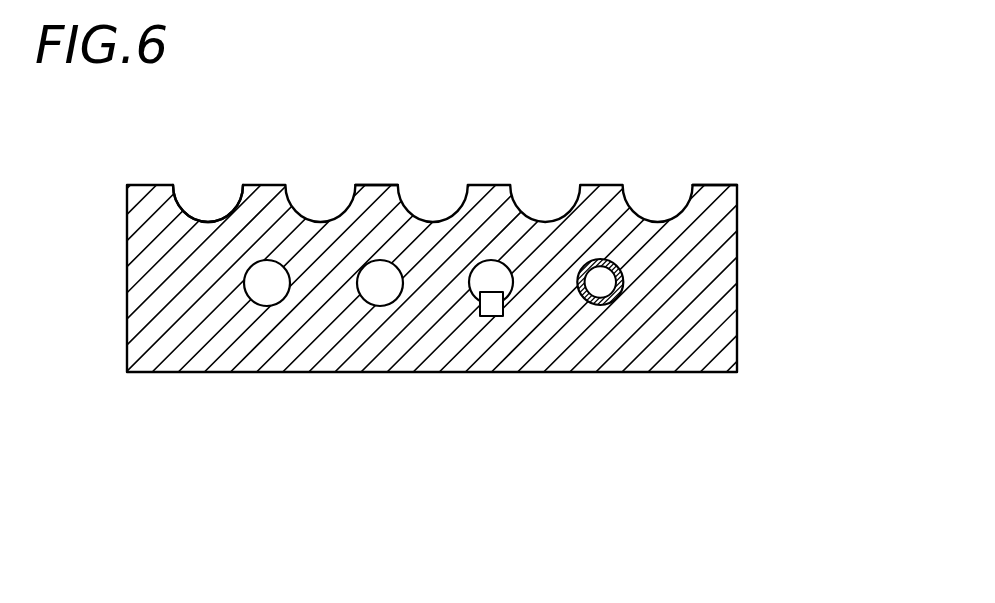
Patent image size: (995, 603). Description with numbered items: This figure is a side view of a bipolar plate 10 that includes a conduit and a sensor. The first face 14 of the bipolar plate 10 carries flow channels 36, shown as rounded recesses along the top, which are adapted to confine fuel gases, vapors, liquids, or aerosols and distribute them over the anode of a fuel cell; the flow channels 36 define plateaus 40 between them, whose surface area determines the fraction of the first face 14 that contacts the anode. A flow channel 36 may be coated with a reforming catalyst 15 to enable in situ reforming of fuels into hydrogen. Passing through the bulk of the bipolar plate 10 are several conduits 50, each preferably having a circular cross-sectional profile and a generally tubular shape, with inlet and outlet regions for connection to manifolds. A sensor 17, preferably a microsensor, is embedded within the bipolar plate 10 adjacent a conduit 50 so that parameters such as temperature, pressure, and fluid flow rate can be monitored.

The bipolar plate 10 is at (778, 272).
The first face 14 is at (715, 185).
The reforming catalyst 15 is at (582, 267).
The sensor 17 is at (488, 316).
The flow channel 36 is at (213, 186).
The plateau 40 is at (377, 185).
The conduit 50 is at (272, 284).